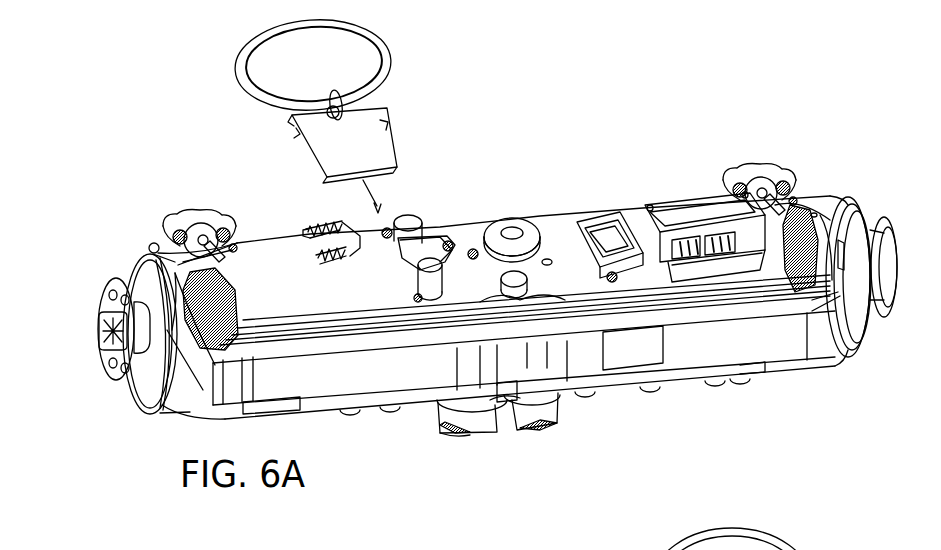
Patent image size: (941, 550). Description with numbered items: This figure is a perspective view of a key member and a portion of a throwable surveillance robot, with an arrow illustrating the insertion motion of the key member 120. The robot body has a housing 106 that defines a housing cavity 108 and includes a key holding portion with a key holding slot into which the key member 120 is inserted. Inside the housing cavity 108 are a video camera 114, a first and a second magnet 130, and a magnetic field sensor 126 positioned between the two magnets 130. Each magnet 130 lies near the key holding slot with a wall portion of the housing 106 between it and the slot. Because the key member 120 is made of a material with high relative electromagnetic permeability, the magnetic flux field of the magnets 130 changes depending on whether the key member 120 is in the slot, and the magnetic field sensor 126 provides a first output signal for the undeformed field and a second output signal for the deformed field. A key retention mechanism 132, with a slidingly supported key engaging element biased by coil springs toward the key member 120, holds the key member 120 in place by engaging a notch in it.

In FIG. 6A, the housing 106 is at (190, 410).
In FIG. 6A, the housing cavity 108 is at (155, 247).
In FIG. 6A, the video camera 114 is at (518, 233).
In FIG. 6A, the key member 120 is at (383, 110).
In FIG. 6A, the magnetic field sensor 126 is at (417, 250).
In FIG. 6B, the magnetic field sensor 126 is at (840, 549).
In FIG. 6A, the magnets 130 is at (432, 265).
In FIG. 6A, the key retention mechanism 132 is at (309, 219).